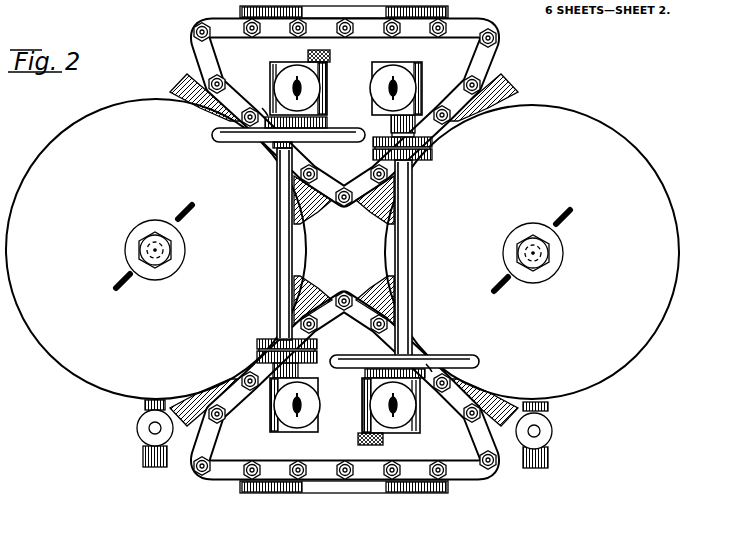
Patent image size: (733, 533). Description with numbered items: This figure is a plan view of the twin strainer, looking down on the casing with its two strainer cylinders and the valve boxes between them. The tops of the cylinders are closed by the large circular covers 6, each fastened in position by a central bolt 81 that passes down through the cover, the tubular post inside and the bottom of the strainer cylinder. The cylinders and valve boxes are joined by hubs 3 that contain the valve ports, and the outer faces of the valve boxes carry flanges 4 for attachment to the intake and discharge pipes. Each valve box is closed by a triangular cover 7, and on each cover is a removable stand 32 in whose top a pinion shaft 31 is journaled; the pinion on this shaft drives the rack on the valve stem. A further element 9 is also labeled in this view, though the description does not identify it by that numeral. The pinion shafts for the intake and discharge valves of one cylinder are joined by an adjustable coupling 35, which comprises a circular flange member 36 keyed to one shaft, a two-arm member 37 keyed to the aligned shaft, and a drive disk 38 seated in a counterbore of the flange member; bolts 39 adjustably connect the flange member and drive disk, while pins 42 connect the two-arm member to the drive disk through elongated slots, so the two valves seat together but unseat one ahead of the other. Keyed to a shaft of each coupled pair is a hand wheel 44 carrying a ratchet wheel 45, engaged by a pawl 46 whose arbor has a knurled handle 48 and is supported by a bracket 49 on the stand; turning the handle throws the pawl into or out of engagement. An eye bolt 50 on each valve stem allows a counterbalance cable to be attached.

The hub 3 is at (184, 84).
The flange 4 is at (450, 14).
The circular cover 6 is at (342, 249).
The triangular cover 7 is at (345, 249).
The pulley 9 is at (285, 80).
The pinion shaft 31 is at (276, 265).
The stand 32 is at (280, 64).
The adjustable coupling 35 is at (433, 150).
The circular flange member 36 is at (433, 140).
The two-arm member 37 is at (433, 158).
The drive disk 38 is at (433, 146).
The bolt 39 is at (408, 180).
The pin 42 is at (430, 165).
The hand wheel 44 is at (228, 148).
The ratchet wheel 45 is at (268, 106).
The pawl 46 is at (328, 122).
The knurled handle 48 is at (331, 54).
The bracket 49 is at (328, 78).
The eye bolt 50 is at (301, 90).
The bolt 81 is at (166, 262).